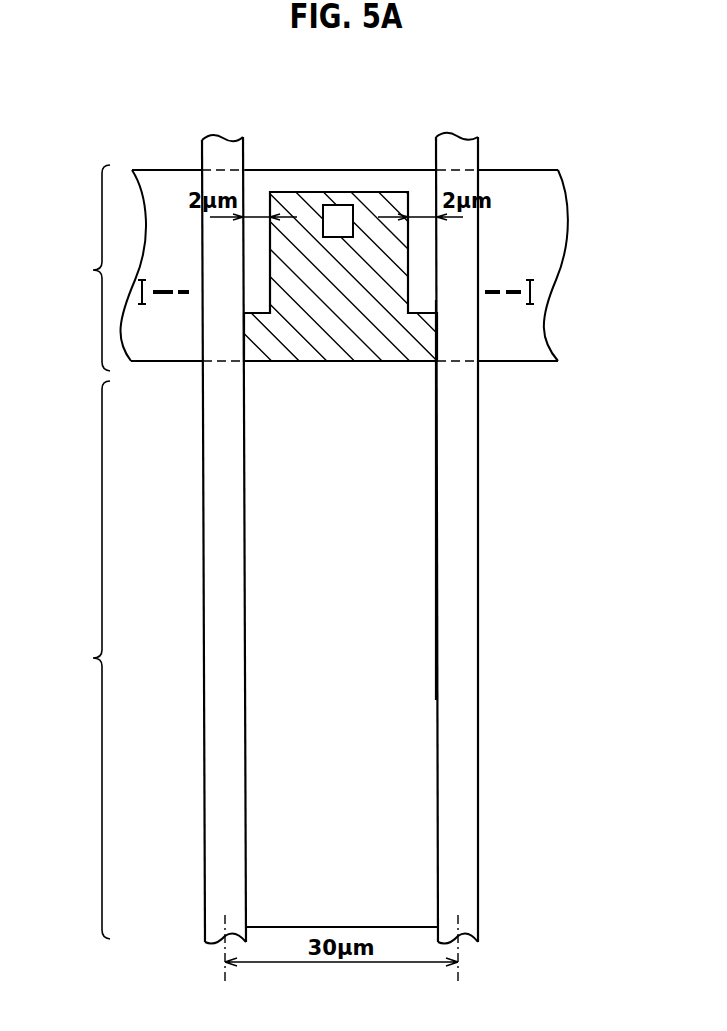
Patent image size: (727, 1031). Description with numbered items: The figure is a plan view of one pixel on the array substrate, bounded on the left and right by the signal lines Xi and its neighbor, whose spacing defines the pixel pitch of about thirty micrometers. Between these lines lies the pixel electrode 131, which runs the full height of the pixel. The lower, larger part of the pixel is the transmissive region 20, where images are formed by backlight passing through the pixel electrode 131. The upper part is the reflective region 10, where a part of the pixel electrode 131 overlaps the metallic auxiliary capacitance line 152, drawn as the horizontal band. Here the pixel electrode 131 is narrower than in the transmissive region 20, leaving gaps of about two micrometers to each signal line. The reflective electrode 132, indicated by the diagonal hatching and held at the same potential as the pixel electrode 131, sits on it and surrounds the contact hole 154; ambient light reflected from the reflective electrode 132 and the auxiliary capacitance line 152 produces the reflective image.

The reflective region 10 is at (82, 268).
The transmissive region 20 is at (82, 660).
The pixel electrode 131 is at (425, 654).
The reflective electrode 132 is at (404, 191).
The metallic auxiliary capacitance line 152 is at (517, 168).
The contact hole 154 is at (343, 205).
The signal line Xi is at (203, 497).